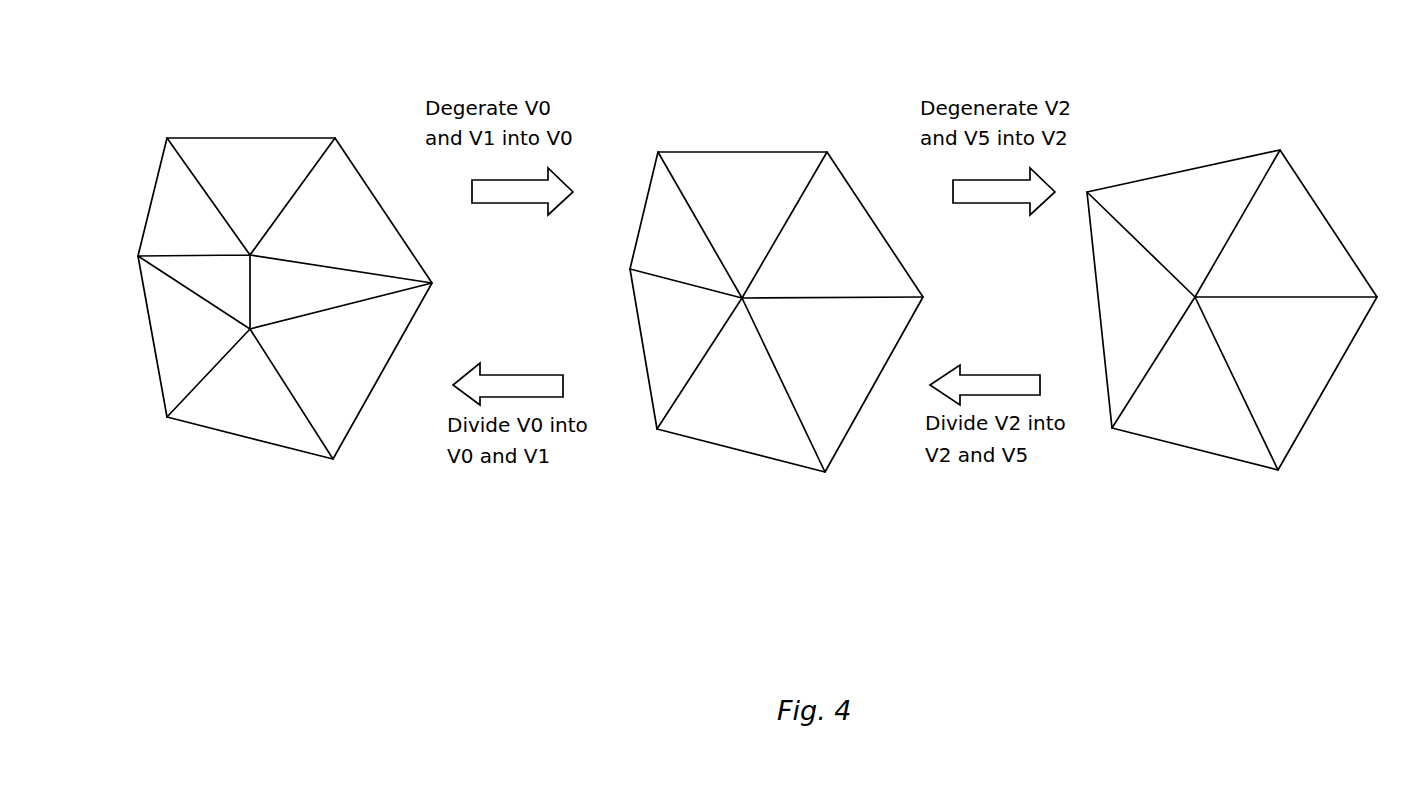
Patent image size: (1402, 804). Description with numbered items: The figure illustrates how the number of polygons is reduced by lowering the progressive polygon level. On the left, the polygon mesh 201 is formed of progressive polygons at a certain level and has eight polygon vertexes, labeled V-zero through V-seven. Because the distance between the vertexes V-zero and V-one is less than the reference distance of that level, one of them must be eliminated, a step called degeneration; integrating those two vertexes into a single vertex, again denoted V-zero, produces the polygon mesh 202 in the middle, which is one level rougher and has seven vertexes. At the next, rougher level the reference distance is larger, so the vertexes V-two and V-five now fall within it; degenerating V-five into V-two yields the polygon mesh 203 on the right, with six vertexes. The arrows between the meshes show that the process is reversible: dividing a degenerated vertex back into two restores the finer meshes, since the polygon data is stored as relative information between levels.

The polygon mesh 201 is at (228, 137).
The polygon mesh 202 is at (727, 150).
The polygon mesh 203 is at (1177, 172).